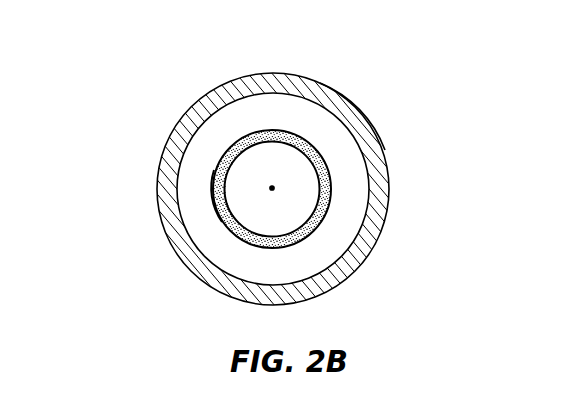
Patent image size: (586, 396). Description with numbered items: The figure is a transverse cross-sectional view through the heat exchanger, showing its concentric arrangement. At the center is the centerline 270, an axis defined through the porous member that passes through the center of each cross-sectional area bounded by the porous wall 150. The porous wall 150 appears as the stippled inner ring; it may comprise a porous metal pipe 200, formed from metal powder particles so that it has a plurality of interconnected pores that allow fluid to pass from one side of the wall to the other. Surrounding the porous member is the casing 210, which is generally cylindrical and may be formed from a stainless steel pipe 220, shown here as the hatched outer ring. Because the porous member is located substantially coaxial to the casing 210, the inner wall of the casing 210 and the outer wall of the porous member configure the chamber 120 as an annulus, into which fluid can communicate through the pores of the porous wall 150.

The chamber 120 is at (312, 252).
The porous wall 150 is at (237, 142).
The porous metal pipe 200 is at (213, 179).
The casing 210 is at (373, 123).
The pipe 220 is at (377, 182).
The centerline 270 is at (272, 190).